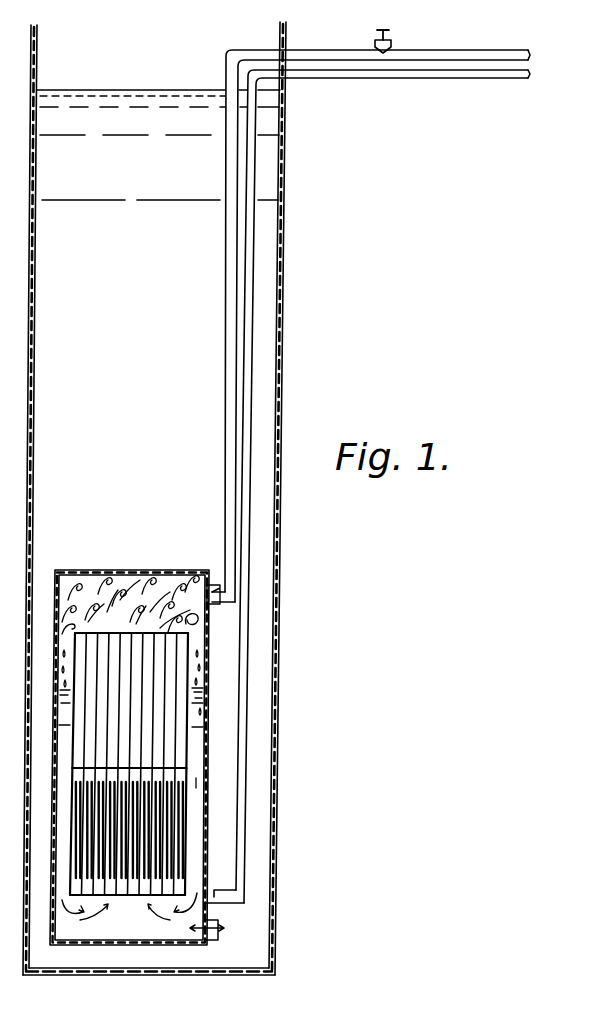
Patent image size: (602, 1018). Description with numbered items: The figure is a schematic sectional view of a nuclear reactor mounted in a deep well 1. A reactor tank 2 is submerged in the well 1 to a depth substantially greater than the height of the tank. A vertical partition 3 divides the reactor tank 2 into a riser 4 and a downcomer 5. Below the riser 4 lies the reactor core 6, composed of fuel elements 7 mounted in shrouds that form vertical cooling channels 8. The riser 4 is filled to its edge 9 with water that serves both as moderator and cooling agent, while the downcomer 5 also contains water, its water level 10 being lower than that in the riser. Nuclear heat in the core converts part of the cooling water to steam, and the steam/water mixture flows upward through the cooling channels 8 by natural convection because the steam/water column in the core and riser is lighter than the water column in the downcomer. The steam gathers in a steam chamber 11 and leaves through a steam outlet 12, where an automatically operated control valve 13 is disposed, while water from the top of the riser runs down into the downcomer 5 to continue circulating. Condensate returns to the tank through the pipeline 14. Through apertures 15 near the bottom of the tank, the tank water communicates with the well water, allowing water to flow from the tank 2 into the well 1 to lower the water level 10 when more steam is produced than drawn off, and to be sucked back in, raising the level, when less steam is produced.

The deep well 1 is at (182, 268).
The reactor tank 2 is at (210, 650).
The vertical partition 3 is at (208, 666).
The riser 4 is at (137, 740).
The downcomer 5 is at (192, 782).
The reactor core 6 is at (130, 842).
The fuel elements 7 is at (183, 800).
The cooling channels 8 is at (204, 912).
The edge 9 is at (190, 618).
The water level 10 is at (212, 683).
The steam chamber 11 is at (127, 588).
The steam outlet 12 is at (228, 312).
The control valve 13 is at (394, 44).
The pipeline 14 is at (247, 343).
The apertures 15 is at (214, 940).